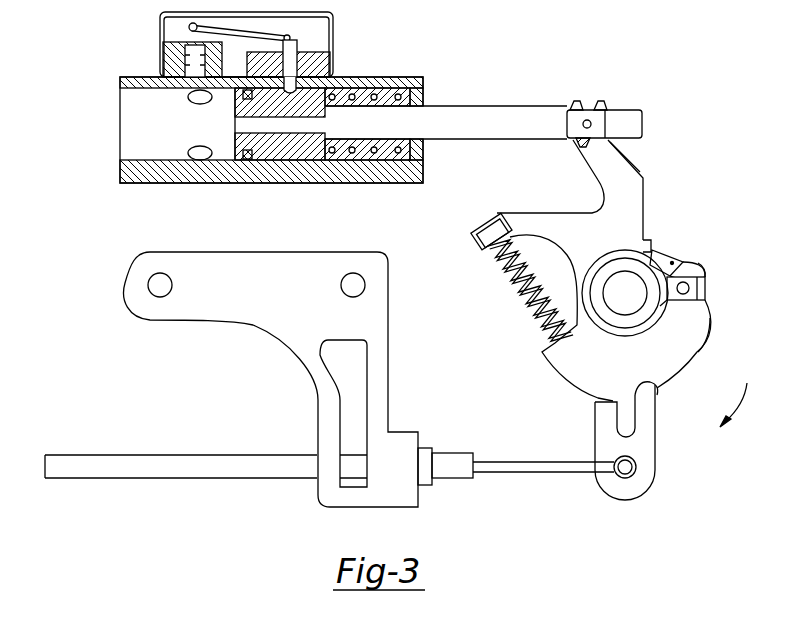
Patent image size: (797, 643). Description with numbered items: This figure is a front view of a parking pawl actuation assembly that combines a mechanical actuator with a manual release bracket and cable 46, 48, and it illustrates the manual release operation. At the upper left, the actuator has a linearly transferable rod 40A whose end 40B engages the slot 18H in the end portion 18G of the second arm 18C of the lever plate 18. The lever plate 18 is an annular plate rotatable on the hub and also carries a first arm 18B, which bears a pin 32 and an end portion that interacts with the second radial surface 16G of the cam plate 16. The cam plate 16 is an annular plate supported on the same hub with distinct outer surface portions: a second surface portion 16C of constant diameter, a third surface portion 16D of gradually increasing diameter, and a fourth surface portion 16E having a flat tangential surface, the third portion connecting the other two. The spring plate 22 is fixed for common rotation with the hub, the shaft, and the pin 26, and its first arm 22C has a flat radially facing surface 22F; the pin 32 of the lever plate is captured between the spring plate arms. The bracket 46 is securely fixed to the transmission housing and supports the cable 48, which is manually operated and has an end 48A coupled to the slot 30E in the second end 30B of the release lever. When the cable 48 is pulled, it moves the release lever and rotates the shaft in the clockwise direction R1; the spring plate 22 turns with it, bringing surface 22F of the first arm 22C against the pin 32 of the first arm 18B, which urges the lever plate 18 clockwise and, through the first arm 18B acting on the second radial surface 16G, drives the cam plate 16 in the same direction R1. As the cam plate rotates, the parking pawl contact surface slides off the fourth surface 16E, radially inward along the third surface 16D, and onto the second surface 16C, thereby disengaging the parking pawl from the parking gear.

The cam plate 16 is at (712, 312).
The second surface portion 16C is at (698, 350).
The third surface portion 16D is at (658, 389).
The fourth surface portion 16E is at (616, 412).
The second radial surface 16G is at (705, 298).
The lever plate 18 is at (645, 205).
The first arm 18B is at (705, 277).
The second arm 18C is at (641, 178).
The end portion 18G is at (603, 101).
The slot 18H is at (578, 142).
The spring plate 22 is at (670, 252).
The first arm 22C is at (690, 259).
The flat radially facing surface 22F is at (706, 266).
The first pin 26 is at (647, 239).
The second end 30B is at (628, 498).
The slot 30E is at (633, 460).
The pin 32 is at (690, 288).
The rod 40A is at (527, 106).
The end 40B is at (620, 95).
The manual release bracket 46 is at (388, 320).
The cable 48 is at (455, 453).
The end 48A is at (636, 471).
The clockwise direction R1 is at (747, 405).